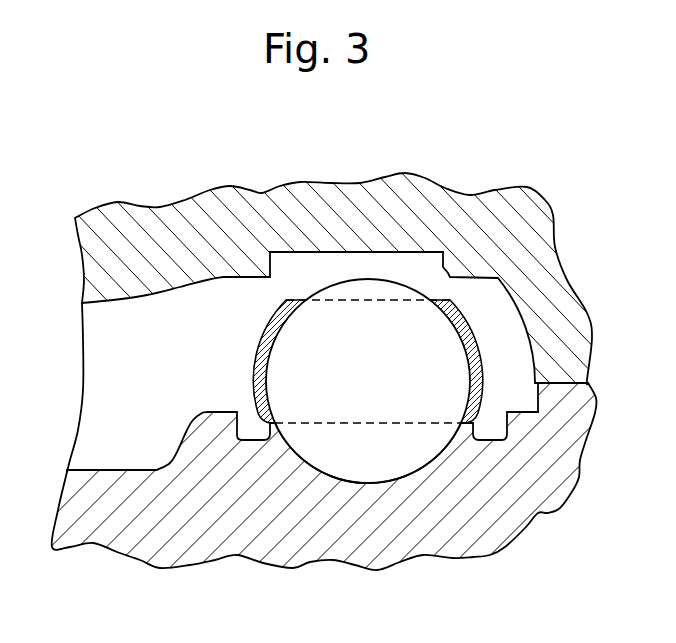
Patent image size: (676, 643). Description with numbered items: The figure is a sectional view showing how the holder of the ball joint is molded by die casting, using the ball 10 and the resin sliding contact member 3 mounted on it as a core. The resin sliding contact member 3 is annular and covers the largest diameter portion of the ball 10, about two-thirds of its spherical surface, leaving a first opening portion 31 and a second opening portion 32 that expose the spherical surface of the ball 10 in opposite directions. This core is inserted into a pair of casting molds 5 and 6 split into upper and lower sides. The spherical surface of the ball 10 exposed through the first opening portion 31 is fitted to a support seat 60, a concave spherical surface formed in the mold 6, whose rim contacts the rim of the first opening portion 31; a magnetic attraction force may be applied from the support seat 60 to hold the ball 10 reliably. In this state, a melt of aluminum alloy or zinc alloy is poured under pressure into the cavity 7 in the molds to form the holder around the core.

The resin sliding contact member 3 is at (487, 383).
The casting mold 5 is at (542, 245).
The casting mold 6 is at (563, 458).
The cavity 7 is at (181, 366).
The ball 10 is at (382, 465).
The first opening portion 31 is at (428, 430).
The second opening portion 32 is at (400, 300).
The support seat 60 is at (343, 482).